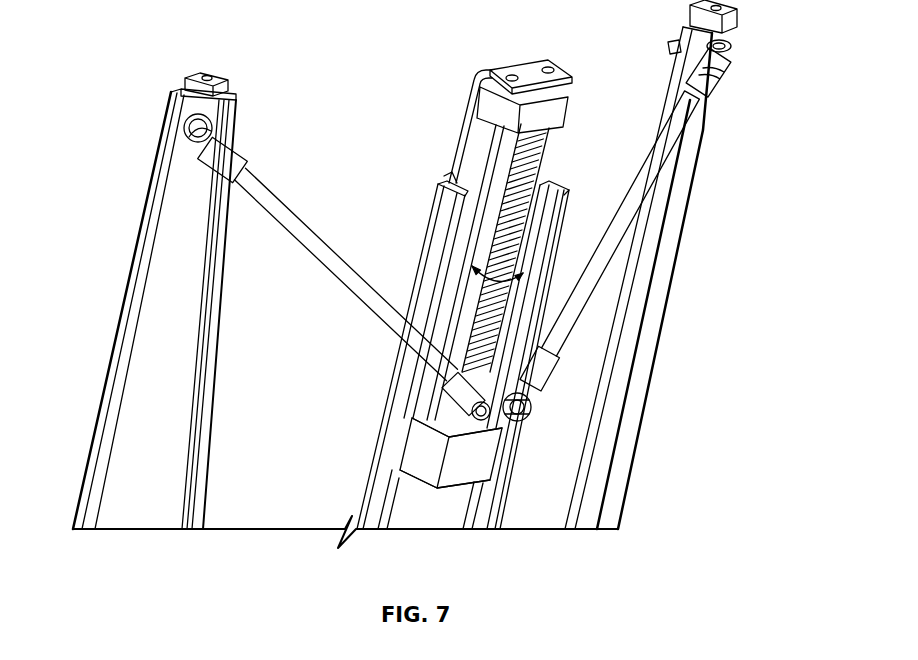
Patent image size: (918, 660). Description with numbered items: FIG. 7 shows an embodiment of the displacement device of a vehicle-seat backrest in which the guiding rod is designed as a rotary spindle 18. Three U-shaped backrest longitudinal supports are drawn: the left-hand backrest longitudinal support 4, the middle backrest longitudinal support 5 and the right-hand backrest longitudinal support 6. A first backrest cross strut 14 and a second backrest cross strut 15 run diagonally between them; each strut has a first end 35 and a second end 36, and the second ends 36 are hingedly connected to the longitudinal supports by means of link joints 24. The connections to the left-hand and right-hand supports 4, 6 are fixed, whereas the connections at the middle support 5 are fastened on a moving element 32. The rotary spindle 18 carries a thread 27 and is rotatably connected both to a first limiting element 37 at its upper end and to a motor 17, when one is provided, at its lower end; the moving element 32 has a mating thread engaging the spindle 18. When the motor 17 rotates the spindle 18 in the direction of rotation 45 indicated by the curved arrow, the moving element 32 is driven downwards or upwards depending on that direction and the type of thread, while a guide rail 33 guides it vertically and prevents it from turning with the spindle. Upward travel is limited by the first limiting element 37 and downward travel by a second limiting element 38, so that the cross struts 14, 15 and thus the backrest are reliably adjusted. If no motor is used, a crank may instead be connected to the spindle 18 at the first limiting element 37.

The left-hand backrest longitudinal support 4 is at (668, 248).
The middle backrest longitudinal support 5 is at (437, 232).
The right-hand backrest longitudinal support 6 is at (157, 373).
The first backrest cross strut 14 is at (655, 155).
The second backrest cross strut 15 is at (303, 225).
The motor 17 is at (418, 455).
The rotary spindle 18 is at (530, 147).
The link joint 24 is at (192, 122).
The thread 27 is at (512, 228).
The moving element 32 is at (537, 400).
The guide rail 33 is at (478, 140).
The first end 35 is at (240, 157).
The second end 36 is at (443, 411).
The first limiting element 37 is at (560, 115).
The second limiting element 38 is at (451, 453).
The rotation direction 45 is at (523, 273).